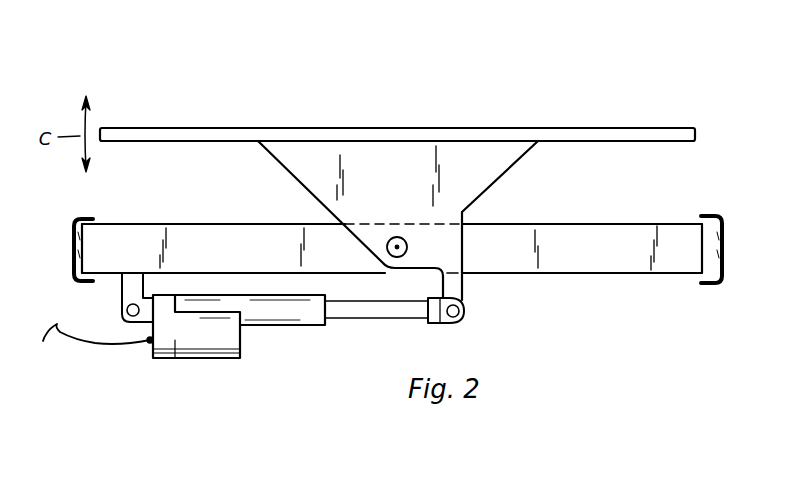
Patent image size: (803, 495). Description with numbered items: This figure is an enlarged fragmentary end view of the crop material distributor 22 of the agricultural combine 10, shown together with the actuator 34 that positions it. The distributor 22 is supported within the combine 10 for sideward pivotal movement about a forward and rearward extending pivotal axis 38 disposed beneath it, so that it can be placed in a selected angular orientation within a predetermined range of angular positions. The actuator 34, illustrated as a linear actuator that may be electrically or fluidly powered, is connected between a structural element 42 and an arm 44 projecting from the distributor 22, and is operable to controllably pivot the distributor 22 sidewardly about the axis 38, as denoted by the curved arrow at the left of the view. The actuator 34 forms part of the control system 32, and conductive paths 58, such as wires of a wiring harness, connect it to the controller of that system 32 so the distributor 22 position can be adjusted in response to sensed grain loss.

The agricultural combine 10 is at (558, 80).
The crop material distributor 22 is at (607, 128).
The system 32 is at (160, 371).
The actuator 34 is at (285, 325).
The pivotal axis 38 is at (396, 245).
The structural element 42 is at (73, 253).
The arm 44 is at (462, 288).
The conductive paths 58 is at (95, 344).